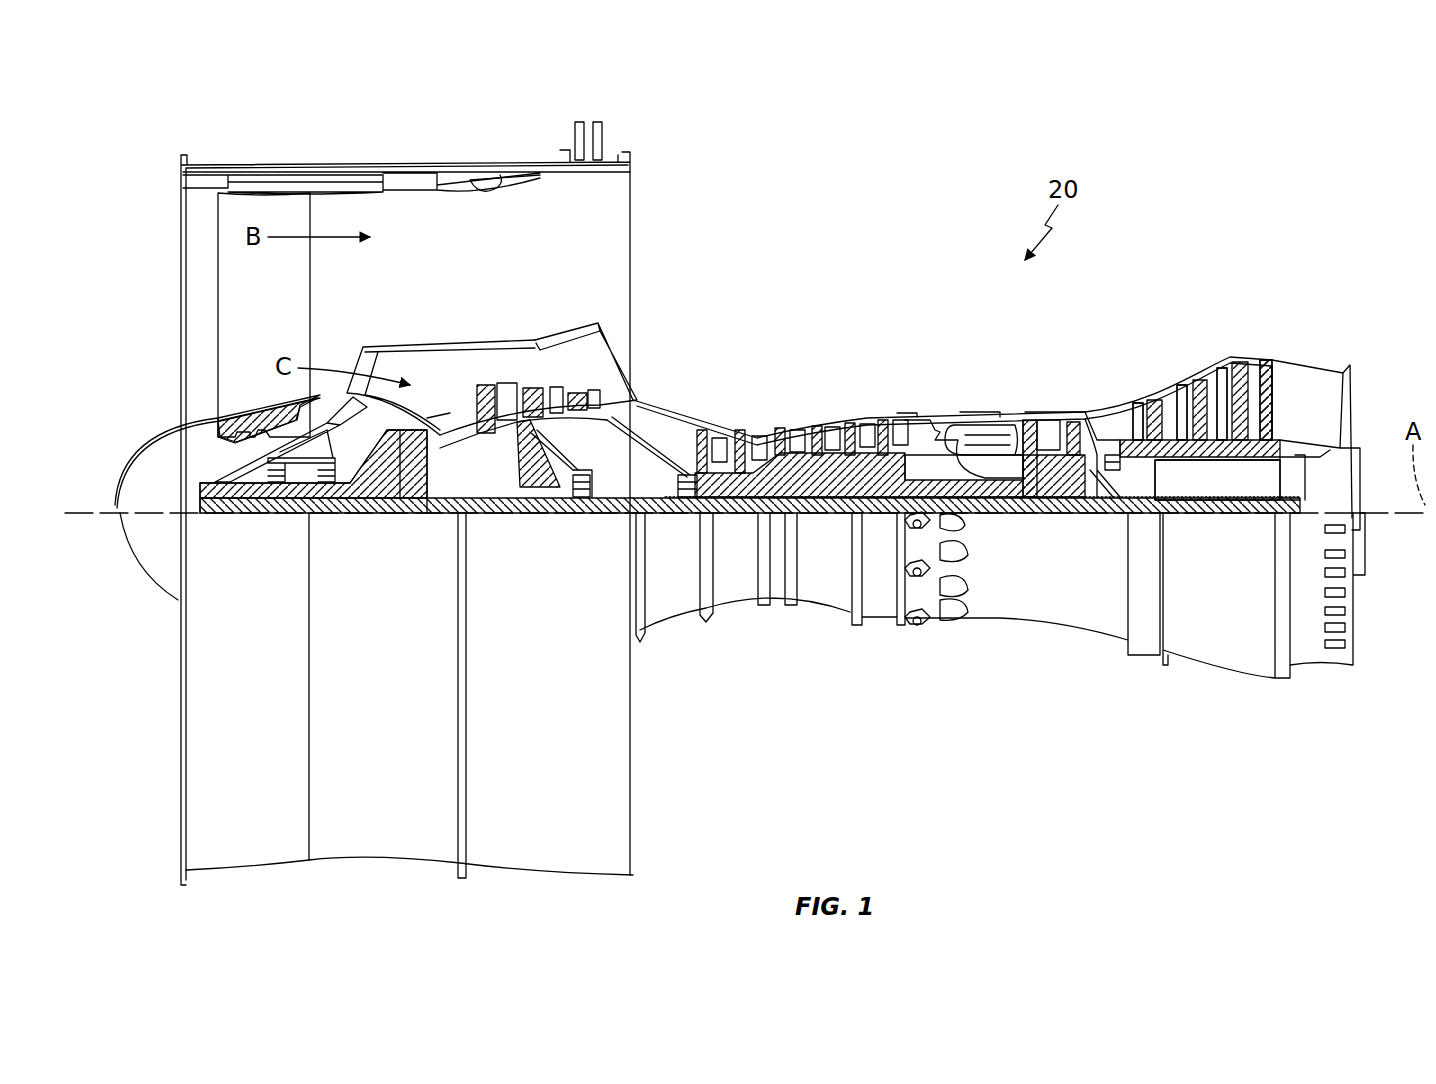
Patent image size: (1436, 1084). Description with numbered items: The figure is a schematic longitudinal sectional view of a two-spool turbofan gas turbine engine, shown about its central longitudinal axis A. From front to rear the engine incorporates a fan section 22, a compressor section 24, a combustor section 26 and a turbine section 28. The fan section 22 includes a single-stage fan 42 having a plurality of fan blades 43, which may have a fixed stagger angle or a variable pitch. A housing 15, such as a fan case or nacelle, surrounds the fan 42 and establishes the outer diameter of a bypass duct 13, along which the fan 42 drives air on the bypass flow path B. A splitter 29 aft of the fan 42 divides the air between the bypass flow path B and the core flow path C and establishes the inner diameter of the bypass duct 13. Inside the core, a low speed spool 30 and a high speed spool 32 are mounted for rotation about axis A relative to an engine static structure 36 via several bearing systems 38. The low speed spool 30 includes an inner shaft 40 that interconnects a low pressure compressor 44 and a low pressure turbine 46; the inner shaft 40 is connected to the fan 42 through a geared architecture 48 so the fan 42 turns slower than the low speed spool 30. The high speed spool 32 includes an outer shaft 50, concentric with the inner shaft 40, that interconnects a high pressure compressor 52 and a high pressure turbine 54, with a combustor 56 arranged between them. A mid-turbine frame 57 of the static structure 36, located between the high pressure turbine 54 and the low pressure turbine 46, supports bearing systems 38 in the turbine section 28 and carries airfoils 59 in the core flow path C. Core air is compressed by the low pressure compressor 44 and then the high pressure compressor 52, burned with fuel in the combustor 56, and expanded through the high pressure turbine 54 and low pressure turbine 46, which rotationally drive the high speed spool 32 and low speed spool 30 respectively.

The bypass duct 13 is at (500, 175).
The housing 15 is at (412, 165).
The fan section 22 is at (325, 158).
The compressor section 24 is at (683, 408).
The combustor section 26 is at (960, 400).
The turbine section 28 is at (1155, 350).
The splitter 29 is at (395, 345).
The low speed spool 30 is at (833, 515).
The high speed spool 32 is at (880, 477).
The engine static structure 36 is at (878, 620).
The bearing systems 38 is at (590, 500).
The inner shaft 40 is at (655, 515).
The fan 42 is at (280, 302).
The fan blades 43 is at (305, 315).
The low pressure compressor 44 is at (560, 395).
The low pressure turbine 46 is at (1205, 368).
The geared architecture 48 is at (415, 500).
The outer shaft 50 is at (1000, 515).
The high pressure compressor 52 is at (808, 440).
The high pressure turbine 54 is at (1055, 415).
The combustor 56 is at (988, 418).
The mid-turbine frame 57 is at (1104, 400).
The airfoils 59 is at (1150, 465).